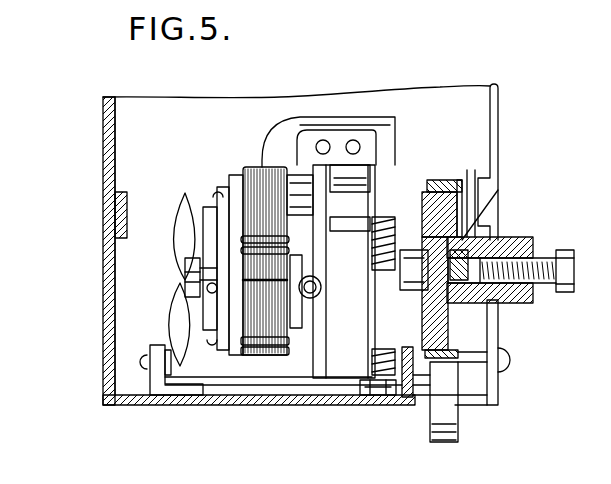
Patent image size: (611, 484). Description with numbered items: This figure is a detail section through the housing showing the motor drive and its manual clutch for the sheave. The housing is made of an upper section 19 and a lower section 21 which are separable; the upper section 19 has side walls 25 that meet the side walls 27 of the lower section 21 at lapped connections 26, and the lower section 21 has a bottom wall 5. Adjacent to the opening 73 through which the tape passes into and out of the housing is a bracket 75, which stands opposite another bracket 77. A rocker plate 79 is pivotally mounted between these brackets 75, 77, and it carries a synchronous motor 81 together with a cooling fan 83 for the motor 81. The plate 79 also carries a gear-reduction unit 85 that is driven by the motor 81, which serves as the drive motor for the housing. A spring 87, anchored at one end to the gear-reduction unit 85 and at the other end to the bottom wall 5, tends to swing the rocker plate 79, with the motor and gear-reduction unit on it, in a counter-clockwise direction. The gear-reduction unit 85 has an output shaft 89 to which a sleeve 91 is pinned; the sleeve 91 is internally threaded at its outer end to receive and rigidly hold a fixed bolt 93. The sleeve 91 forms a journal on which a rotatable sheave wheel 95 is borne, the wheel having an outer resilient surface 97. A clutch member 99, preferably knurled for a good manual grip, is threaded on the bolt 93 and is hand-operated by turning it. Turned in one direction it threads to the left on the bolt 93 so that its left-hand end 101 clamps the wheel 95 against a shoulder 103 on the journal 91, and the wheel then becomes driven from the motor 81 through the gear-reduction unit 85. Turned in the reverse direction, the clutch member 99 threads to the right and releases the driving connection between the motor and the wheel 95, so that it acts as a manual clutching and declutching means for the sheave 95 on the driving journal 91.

The bottom wall 5 is at (340, 400).
The upper section 19 is at (127, 143).
The lower section 21 is at (132, 322).
The side walls 25 is at (112, 168).
The lapped connections 26 is at (108, 218).
The side walls 27 is at (110, 300).
The opening 73 is at (472, 408).
The bracket 75 is at (416, 400).
The bracket 77 is at (158, 384).
The rocker plate 79 is at (222, 370).
The synchronous motor 81 is at (280, 355).
The cooling fan 83 is at (186, 272).
The gear-reduction unit 85 is at (358, 336).
The spring 87 is at (385, 232).
The output shaft 89 is at (484, 295).
The sleeve 91 is at (512, 240).
The bolt 93 is at (560, 252).
The sheave wheel 95 is at (430, 187).
The outer resilient surface 97 is at (458, 183).
The clutch member 99 is at (532, 238).
The left-hand end 101 is at (497, 240).
The shoulder 103 is at (424, 246).